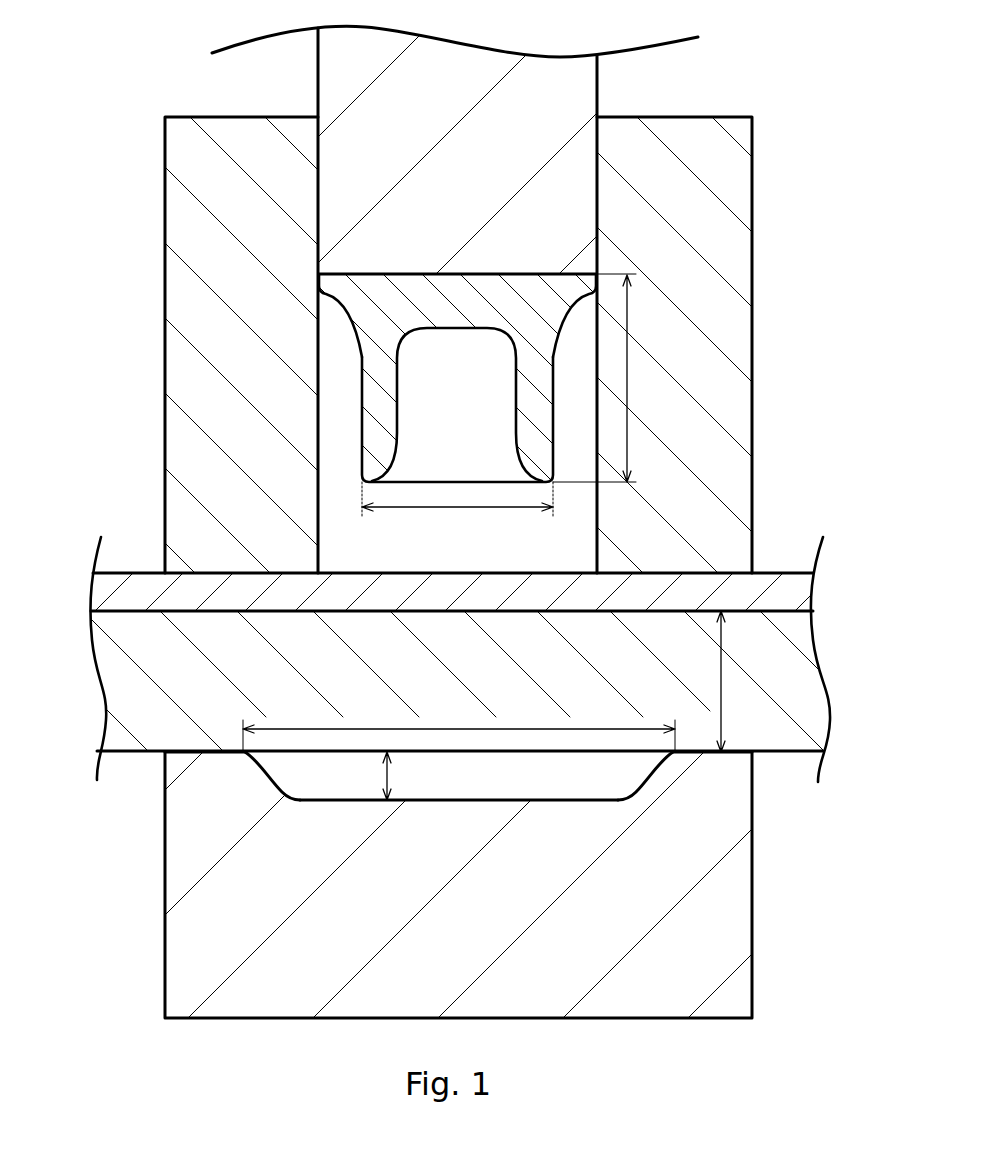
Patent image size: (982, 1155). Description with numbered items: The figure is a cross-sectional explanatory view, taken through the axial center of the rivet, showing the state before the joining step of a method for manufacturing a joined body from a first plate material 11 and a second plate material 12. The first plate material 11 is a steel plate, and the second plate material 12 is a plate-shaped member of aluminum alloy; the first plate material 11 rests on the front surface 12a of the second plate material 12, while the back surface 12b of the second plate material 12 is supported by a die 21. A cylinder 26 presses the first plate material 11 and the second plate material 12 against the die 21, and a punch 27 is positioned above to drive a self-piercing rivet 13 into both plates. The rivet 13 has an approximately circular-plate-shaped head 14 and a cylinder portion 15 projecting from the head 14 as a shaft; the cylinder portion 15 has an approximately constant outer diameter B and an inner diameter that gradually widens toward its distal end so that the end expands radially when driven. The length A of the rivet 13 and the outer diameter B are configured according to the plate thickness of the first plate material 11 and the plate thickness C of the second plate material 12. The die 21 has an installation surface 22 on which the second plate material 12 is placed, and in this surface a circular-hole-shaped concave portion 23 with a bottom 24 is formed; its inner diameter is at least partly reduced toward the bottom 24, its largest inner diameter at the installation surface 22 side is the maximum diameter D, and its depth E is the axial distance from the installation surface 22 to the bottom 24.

The first plate material 11 is at (546, 567).
The second plate material 12 is at (454, 664).
The front surface 12a is at (780, 608).
The back surface 12b is at (775, 753).
The self-piercing rivet 13 is at (448, 378).
The head 14 is at (348, 297).
The cylinder portion 15 is at (373, 393).
The die 21 is at (477, 853).
The installation surface 22 is at (180, 747).
The concave portion 23 is at (574, 778).
The bottom 24 is at (443, 797).
The cylinder 26 is at (740, 256).
The punch 27 is at (582, 91).
The length of the rivet A is at (629, 388).
The outer diameter of the cylinder portion B is at (471, 510).
The plate thickness of the second plate material C is at (718, 672).
The maximum diameter of the concave portion D is at (418, 727).
The depth of the concave portion E is at (383, 778).